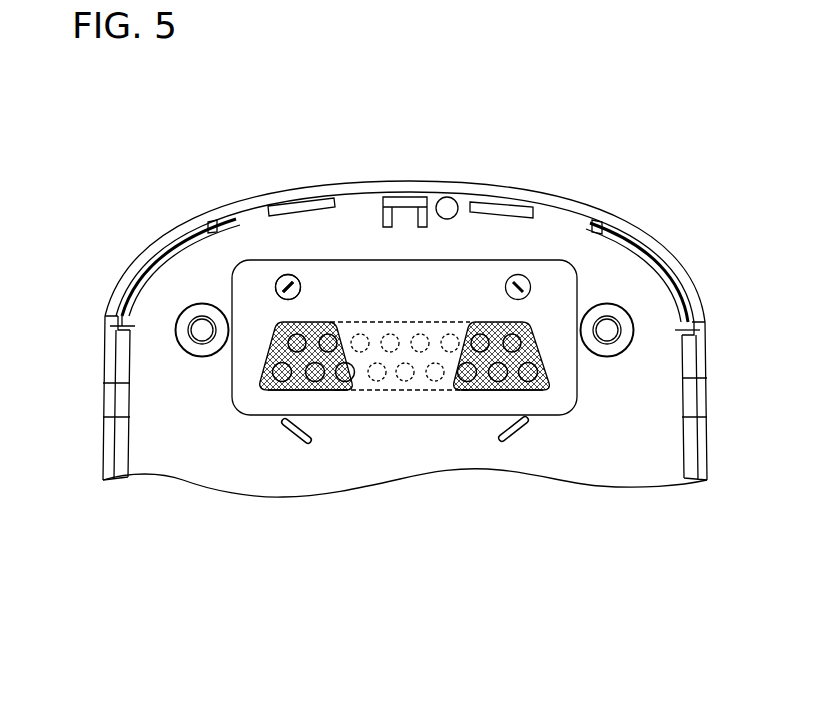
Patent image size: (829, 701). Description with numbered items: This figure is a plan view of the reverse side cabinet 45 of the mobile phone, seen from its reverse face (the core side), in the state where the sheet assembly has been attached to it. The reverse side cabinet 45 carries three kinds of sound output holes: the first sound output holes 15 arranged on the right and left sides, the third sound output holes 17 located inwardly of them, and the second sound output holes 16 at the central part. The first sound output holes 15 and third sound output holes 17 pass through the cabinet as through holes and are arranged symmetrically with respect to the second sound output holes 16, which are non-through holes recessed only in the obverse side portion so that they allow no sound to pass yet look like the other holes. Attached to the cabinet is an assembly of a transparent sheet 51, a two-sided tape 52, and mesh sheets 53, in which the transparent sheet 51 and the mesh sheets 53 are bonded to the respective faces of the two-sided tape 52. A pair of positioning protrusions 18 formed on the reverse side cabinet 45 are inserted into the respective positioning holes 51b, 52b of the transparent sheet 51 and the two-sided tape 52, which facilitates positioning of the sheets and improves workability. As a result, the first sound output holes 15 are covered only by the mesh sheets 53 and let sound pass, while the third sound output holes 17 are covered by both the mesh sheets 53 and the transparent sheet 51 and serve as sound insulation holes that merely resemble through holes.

The first sound output holes 15 is at (318, 324).
The second sound output holes 16 is at (405, 362).
The third sound output holes 17 is at (377, 362).
The positioning protrusions 18 is at (510, 280).
The reverse side cabinet 45 is at (641, 221).
The transparent sheet 51 is at (413, 402).
The two-sided tape 52 is at (367, 392).
The mesh sheets 53 is at (268, 395).
The positioning holes 51b is at (280, 279).
The positioning holes 52b is at (286, 201).